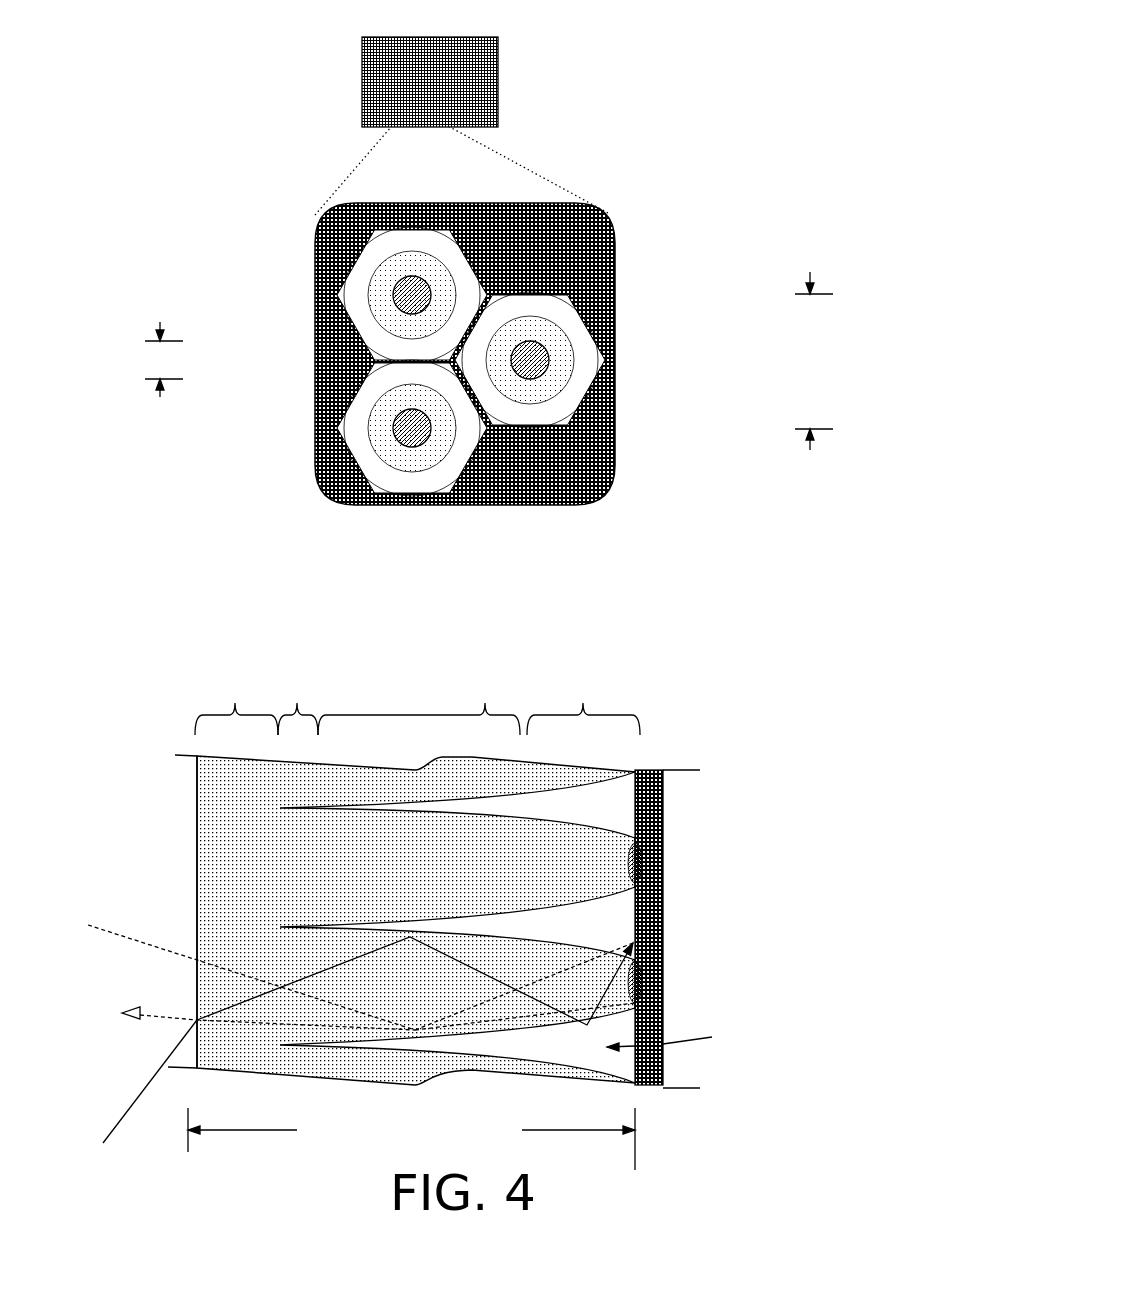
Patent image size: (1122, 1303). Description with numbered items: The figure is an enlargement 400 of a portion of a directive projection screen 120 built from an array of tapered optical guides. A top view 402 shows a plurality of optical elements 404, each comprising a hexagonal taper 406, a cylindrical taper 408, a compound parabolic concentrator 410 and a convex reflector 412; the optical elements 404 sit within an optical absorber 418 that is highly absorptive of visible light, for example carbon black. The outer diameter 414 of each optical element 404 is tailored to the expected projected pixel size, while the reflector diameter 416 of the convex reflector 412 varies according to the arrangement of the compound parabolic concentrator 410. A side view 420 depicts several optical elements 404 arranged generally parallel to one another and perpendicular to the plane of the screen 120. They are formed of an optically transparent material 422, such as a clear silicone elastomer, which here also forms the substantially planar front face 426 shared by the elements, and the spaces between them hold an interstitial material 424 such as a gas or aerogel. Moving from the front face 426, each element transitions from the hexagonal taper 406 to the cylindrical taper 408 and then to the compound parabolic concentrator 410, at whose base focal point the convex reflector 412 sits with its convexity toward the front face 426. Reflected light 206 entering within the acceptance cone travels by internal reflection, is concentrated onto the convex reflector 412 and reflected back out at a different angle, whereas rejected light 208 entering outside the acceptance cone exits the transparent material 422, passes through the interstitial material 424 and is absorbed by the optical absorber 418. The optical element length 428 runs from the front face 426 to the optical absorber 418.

The enlargement 400 is at (757, 32).
The screen 120 is at (643, 90).
The top view 402 is at (228, 140).
The optical element 404 is at (335, 283).
The hexagonal taper 406 is at (297, 703).
The cylindrical taper 408 is at (662, 448).
The compound parabolic concentrator 410 is at (583, 698).
The convex reflector 412 is at (410, 438).
The outer diameter 414 is at (806, 398).
The reflector diameter 416 is at (155, 399).
The optical absorber 418 is at (590, 473).
The side view 420 is at (250, 617).
The optically transparent material 422 is at (700, 910).
The interstitial material 424 is at (720, 1034).
The front face 426 is at (230, 859).
The optical element length 428 is at (411, 1137).
The reflected light 206 is at (361, 945).
The rejected light 208 is at (135, 1123).